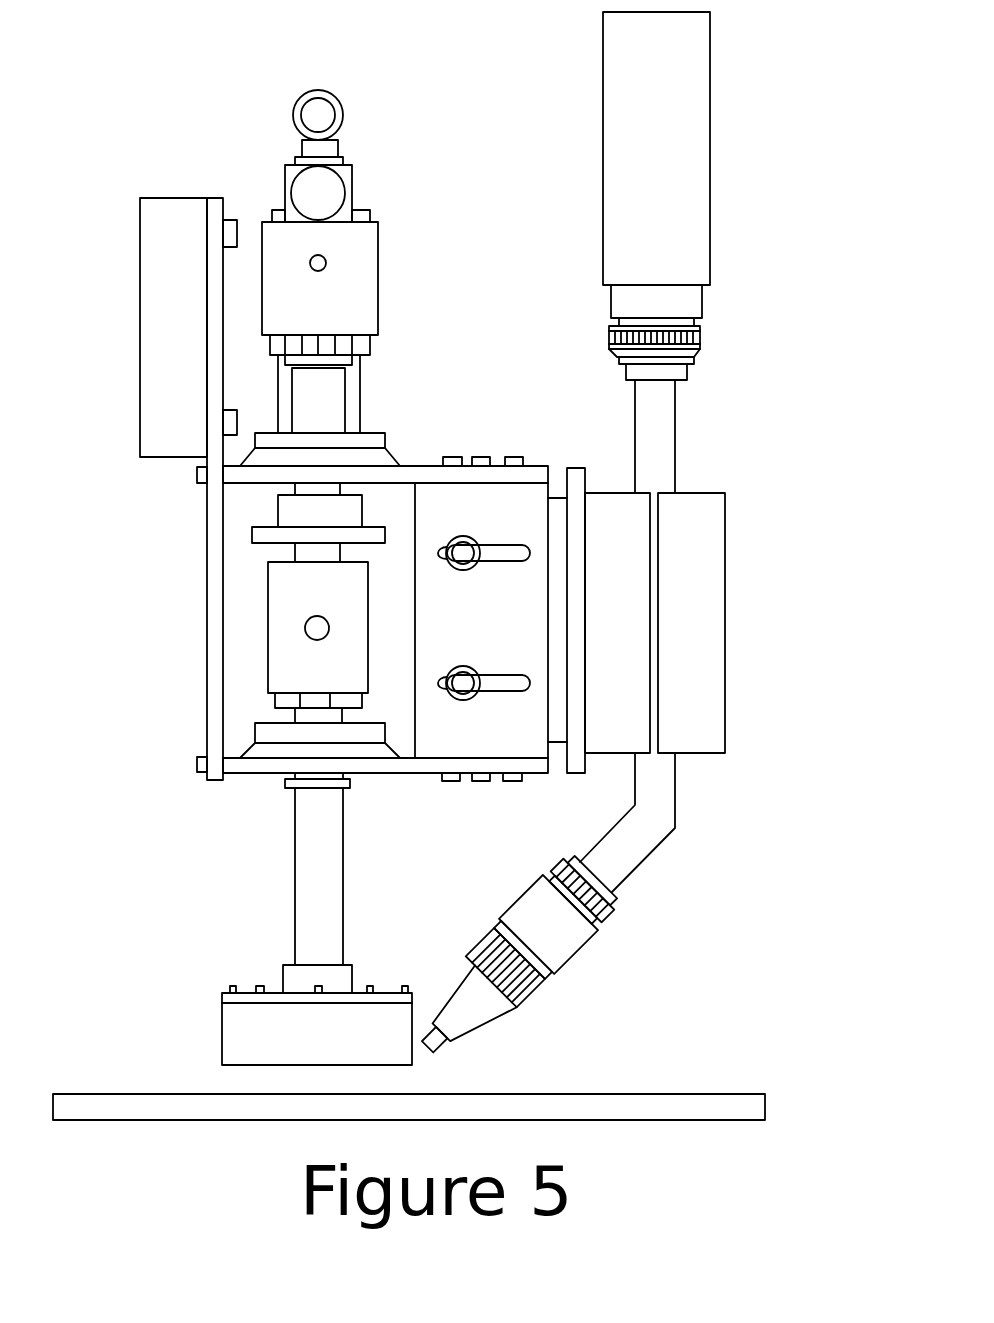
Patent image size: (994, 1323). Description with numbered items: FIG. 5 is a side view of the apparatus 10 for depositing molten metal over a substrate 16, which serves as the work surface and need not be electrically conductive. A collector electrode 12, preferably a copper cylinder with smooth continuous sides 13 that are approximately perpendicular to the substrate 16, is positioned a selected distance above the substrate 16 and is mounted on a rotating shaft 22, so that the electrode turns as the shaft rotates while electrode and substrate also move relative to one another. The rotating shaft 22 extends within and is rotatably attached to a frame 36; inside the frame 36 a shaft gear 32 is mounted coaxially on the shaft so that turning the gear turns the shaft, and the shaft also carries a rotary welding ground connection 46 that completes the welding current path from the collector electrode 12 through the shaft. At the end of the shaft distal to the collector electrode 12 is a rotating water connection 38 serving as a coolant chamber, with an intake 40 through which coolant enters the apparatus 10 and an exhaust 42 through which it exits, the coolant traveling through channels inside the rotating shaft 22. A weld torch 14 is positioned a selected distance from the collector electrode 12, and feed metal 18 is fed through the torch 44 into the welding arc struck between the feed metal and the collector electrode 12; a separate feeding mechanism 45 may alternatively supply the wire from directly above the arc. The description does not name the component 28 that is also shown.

The apparatus 10 is at (112, 184).
The collector electrode 12 is at (248, 1017).
The smooth continuous sides 13 is at (220, 1030).
The weld torch 14 is at (567, 940).
The substrate 16 is at (743, 1110).
The feed metal 18 is at (433, 1048).
The rotating shaft 22 is at (297, 853).
The adjustment shaft 28 is at (353, 420).
The shaft gear 32 is at (263, 533).
The frame 36 is at (212, 725).
The rotating water connection 38 is at (360, 277).
The intake 40 is at (318, 113).
The exhaust 42 is at (303, 193).
The weld torch 44 is at (663, 465).
The feeding mechanism 45 is at (690, 207).
The rotary welding ground connection 46 is at (290, 642).